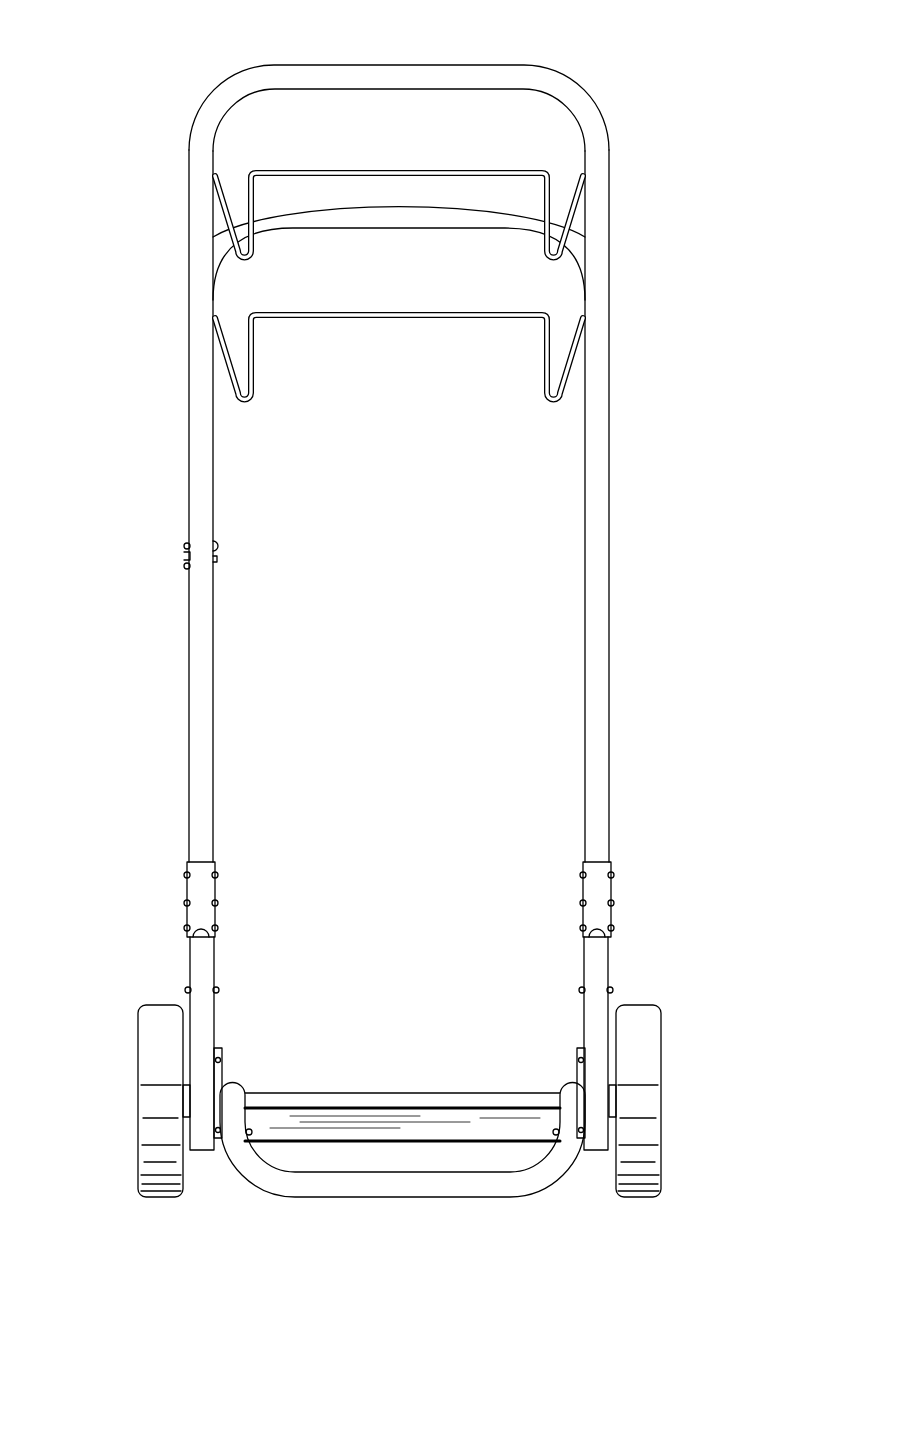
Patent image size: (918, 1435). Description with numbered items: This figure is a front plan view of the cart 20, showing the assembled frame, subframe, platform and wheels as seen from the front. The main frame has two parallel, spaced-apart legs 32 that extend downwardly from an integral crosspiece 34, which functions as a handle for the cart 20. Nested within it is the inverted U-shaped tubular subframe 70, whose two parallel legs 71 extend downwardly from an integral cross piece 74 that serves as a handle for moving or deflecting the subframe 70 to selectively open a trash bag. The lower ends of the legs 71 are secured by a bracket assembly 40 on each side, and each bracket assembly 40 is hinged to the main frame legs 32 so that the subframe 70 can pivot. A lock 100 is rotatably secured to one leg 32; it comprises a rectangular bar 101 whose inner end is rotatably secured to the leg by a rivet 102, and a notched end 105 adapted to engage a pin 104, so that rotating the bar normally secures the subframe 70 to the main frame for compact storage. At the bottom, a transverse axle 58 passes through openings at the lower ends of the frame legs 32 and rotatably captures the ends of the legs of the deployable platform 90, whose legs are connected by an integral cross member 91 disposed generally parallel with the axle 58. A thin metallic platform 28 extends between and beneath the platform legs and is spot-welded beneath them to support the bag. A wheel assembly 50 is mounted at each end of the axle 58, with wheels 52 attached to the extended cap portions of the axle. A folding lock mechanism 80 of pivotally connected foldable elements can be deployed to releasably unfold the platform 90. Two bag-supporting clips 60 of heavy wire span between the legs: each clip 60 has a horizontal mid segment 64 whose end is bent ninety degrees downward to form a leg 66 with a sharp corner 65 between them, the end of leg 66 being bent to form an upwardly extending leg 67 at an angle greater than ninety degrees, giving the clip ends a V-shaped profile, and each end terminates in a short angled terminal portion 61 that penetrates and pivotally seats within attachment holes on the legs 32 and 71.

The cart 20 is at (763, 250).
The platform 28 is at (335, 1122).
The main frame legs 32 is at (192, 960).
The crosspiece 34 is at (386, 222).
The bracket assembly 40 is at (160, 893).
The wheel assembly 50 is at (735, 1082).
The wheels 52 is at (646, 1134).
The axle 58 is at (362, 1093).
The clip 60 is at (268, 135).
The terminal portion 61 is at (588, 314).
The mid segment 64 is at (380, 170).
The sharp corner 65 is at (253, 182).
The leg 66 is at (545, 220).
The leg 67 is at (562, 395).
The subframe 70 is at (652, 113).
The subframe legs 71 is at (214, 637).
The cross piece 74 is at (385, 66).
The folding lock mechanism 80 is at (545, 1045).
The platform 90 is at (535, 1238).
The cross member 91 is at (378, 1180).
The lock 100 is at (107, 532).
The rectangular bar 101 is at (185, 553).
The rivet 102 is at (185, 563).
The pin 104 is at (185, 545).
The notched end 105 is at (186, 562).